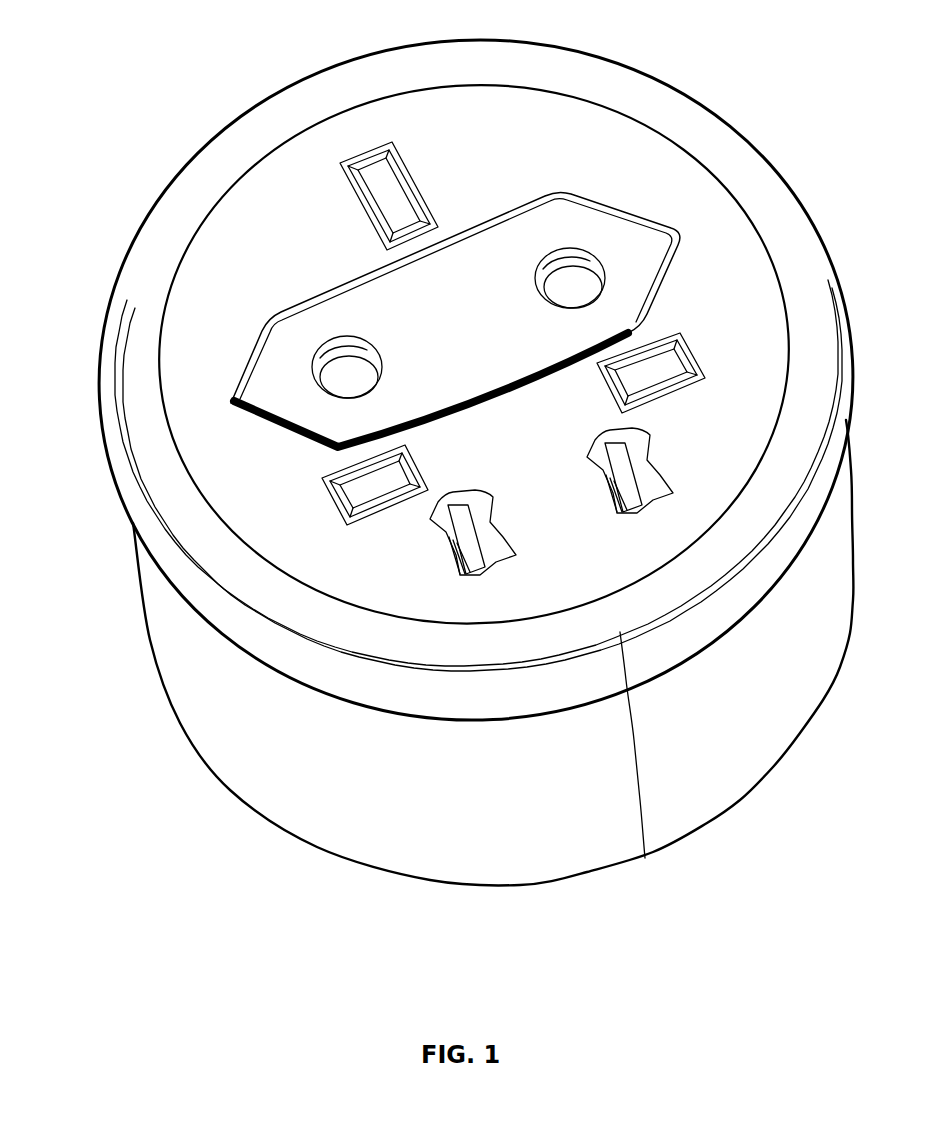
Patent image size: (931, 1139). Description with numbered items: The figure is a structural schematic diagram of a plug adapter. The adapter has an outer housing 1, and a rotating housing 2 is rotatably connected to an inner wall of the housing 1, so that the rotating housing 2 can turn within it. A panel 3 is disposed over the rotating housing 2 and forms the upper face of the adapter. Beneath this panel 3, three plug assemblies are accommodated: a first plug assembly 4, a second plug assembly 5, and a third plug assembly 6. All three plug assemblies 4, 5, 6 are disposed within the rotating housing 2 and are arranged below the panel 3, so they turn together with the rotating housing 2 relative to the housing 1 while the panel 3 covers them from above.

The housing 1 is at (360, 825).
The rotating housing 2 is at (148, 467).
The panel 3 is at (190, 274).
The first plug assembly 4 is at (378, 153).
The second plug assembly 5 is at (647, 495).
The third plug assembly 6 is at (577, 292).